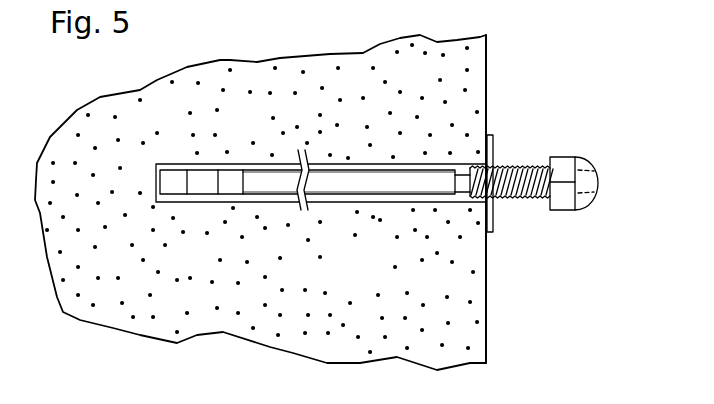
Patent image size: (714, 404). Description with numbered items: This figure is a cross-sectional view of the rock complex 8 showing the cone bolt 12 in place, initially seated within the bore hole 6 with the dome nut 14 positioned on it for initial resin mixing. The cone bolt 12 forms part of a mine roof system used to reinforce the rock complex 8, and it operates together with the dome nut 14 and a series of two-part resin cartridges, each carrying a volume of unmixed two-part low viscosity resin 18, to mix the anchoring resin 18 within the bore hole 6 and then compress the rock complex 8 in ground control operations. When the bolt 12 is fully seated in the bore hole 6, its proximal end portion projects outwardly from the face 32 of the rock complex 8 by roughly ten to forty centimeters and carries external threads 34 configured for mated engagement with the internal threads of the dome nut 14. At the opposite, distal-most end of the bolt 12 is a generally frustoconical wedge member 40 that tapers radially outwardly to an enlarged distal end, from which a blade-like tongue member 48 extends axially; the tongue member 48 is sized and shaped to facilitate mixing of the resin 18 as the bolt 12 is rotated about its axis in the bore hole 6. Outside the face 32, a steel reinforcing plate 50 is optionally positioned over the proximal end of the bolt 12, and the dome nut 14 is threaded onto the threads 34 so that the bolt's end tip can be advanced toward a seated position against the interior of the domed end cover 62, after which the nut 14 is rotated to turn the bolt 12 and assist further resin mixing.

The bore hole 6 is at (487, 200).
The rock complex 8 is at (425, 91).
The cone bolt 12 is at (346, 178).
The dome nut 14 is at (570, 215).
The two-part low viscosity resin 18 is at (229, 170).
The face 32 is at (487, 315).
The external threads 34 is at (527, 167).
The wedge member 40 is at (205, 198).
The tongue member 48 is at (183, 185).
The steel reinforcing plate 50 is at (492, 136).
The domed end cover 62 is at (583, 163).